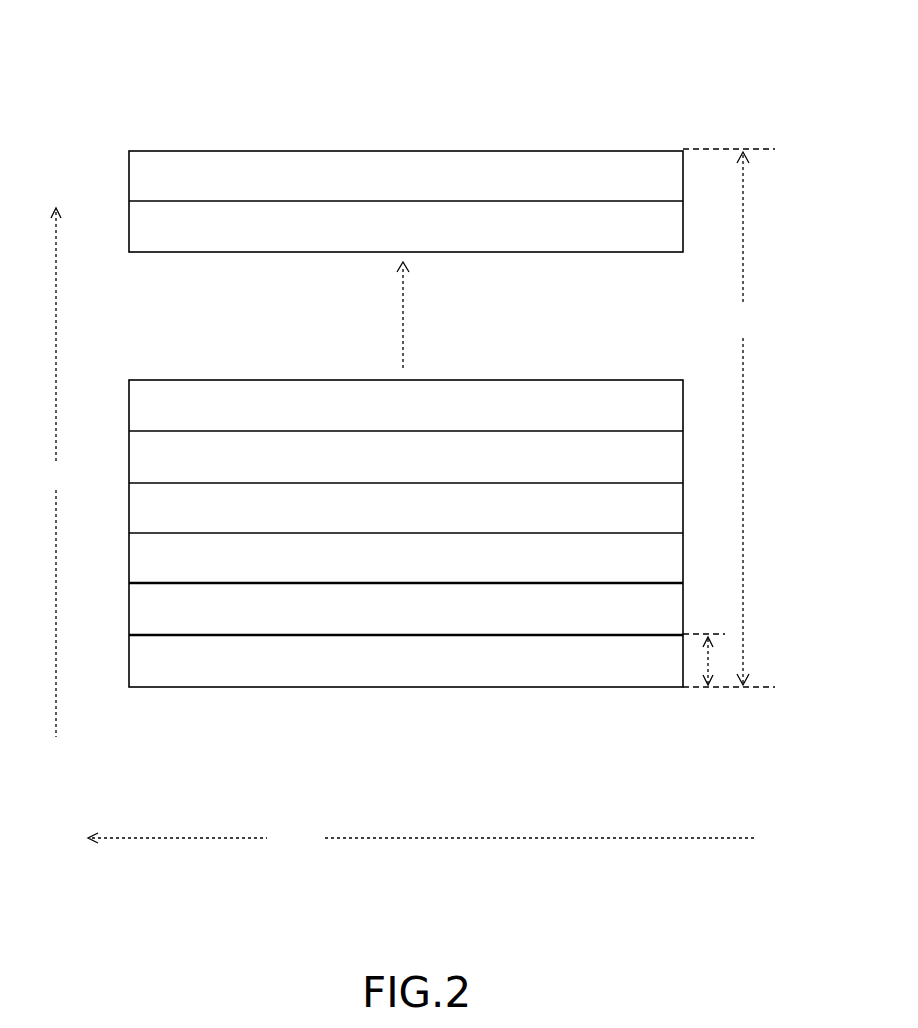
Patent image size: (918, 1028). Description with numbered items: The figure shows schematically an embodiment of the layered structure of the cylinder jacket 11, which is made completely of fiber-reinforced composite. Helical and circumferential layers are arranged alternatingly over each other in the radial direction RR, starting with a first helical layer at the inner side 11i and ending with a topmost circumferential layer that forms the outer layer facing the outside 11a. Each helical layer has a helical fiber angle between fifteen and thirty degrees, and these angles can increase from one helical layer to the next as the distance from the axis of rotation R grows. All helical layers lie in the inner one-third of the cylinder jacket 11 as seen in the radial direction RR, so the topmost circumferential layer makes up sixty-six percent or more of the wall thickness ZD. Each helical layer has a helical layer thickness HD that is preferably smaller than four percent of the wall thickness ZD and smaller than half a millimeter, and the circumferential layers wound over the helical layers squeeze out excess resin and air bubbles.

The cylinder jacket 11 is at (277, 90).
The outside of the cylinder jacket 11a is at (548, 145).
The innermost layer / lower end of structure 11i is at (245, 688).
The wall thickness ZD is at (729, 418).
The helical layer thickness HD is at (701, 660).
The radial direction RR is at (57, 472).
The axis of rotation R is at (422, 840).